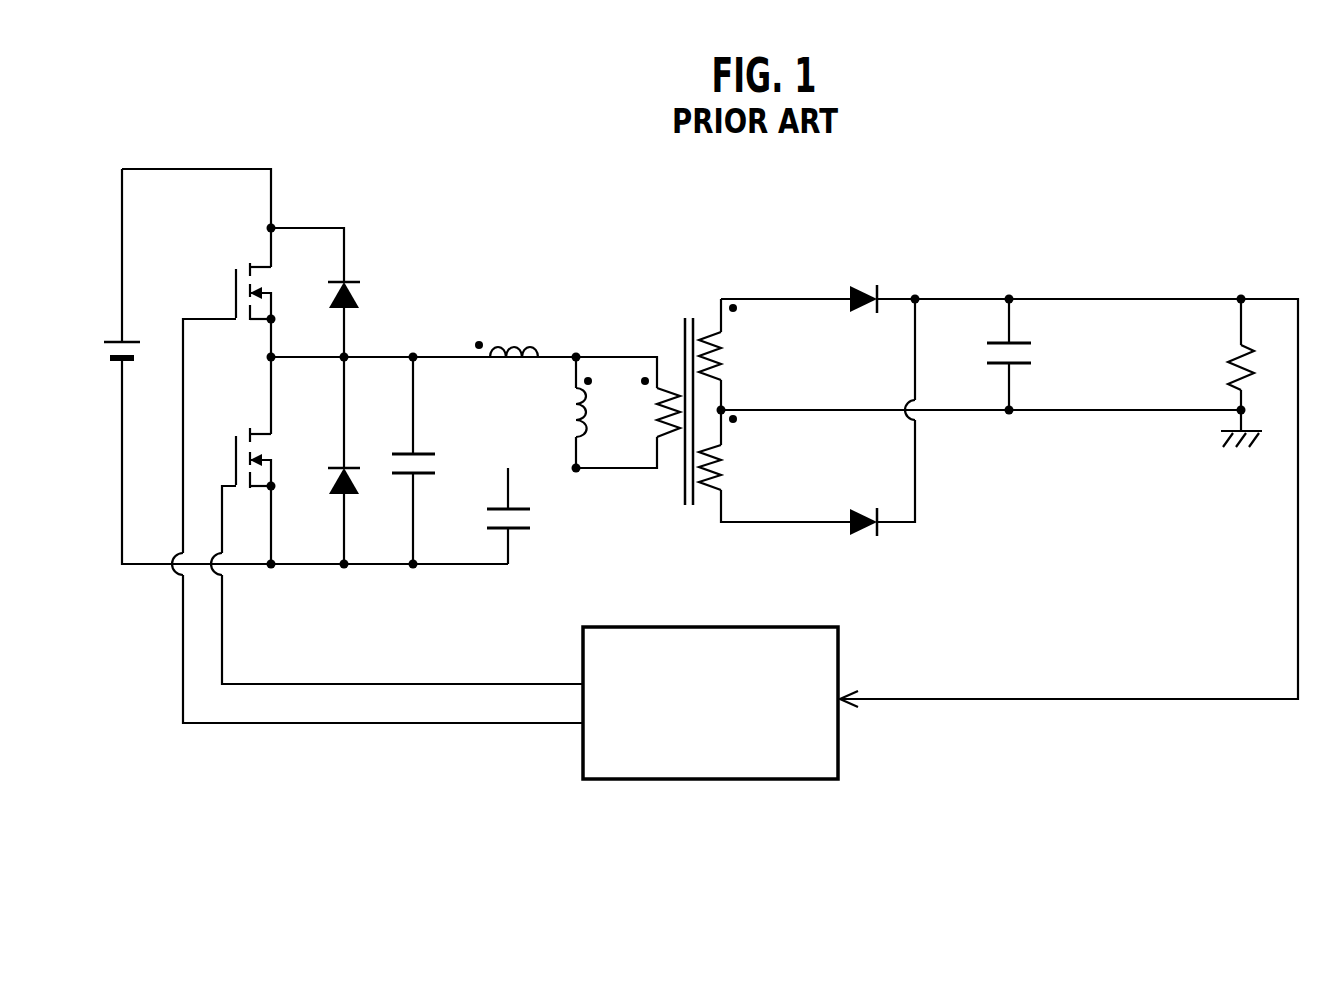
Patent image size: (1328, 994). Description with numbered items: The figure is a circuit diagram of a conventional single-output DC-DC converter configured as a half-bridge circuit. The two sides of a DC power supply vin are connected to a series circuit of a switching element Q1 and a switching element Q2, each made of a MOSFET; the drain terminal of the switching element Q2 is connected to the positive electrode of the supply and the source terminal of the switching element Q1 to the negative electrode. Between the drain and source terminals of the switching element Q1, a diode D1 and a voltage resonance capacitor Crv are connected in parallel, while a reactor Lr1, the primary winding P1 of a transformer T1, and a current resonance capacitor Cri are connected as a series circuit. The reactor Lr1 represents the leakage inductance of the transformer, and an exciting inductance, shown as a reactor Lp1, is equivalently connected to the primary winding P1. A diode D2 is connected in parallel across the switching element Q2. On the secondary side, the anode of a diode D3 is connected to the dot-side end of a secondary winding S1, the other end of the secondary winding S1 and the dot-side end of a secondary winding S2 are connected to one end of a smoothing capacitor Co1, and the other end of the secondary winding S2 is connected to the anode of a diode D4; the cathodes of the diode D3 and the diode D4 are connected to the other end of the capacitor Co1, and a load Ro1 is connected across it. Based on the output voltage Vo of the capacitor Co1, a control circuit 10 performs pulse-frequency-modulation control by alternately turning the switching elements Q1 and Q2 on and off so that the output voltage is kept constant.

The control circuit 10 is at (838, 737).
The switching element Q1 is at (242, 447).
The switching element Q2 is at (242, 280).
The diode D1 is at (353, 496).
The diode D2 is at (353, 280).
The diode D3 is at (884, 286).
The diode D4 is at (863, 507).
The voltage resonance capacitor Crv is at (433, 466).
The current resonance capacitor Cri is at (525, 522).
The reactor Lr1 is at (525, 334).
The reactor Lp1 is at (562, 413).
The primary winding P1 is at (653, 407).
The secondary winding S1 is at (725, 342).
The secondary winding S2 is at (725, 448).
The transformer T1 is at (690, 396).
The smoothing capacitor Co1 is at (1032, 379).
The load Ro1 is at (1215, 355).
The output voltage Vo is at (1009, 298).
The DC power supply vin is at (132, 337).